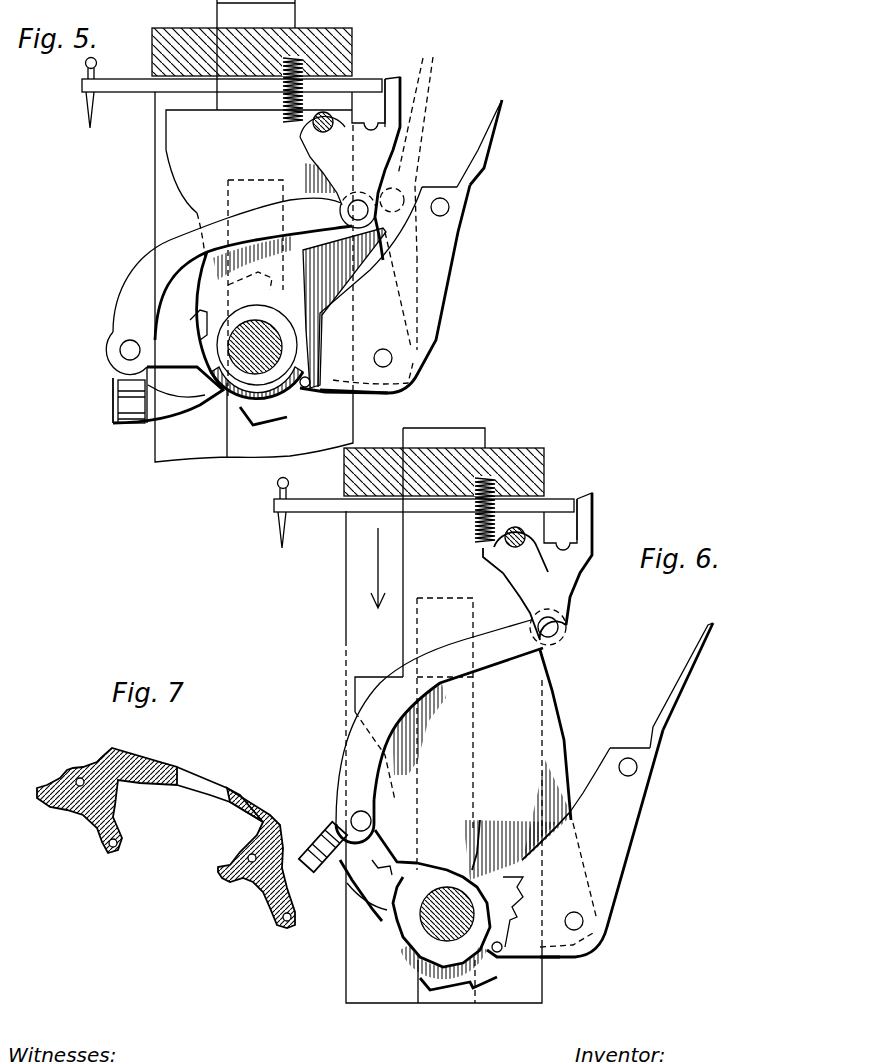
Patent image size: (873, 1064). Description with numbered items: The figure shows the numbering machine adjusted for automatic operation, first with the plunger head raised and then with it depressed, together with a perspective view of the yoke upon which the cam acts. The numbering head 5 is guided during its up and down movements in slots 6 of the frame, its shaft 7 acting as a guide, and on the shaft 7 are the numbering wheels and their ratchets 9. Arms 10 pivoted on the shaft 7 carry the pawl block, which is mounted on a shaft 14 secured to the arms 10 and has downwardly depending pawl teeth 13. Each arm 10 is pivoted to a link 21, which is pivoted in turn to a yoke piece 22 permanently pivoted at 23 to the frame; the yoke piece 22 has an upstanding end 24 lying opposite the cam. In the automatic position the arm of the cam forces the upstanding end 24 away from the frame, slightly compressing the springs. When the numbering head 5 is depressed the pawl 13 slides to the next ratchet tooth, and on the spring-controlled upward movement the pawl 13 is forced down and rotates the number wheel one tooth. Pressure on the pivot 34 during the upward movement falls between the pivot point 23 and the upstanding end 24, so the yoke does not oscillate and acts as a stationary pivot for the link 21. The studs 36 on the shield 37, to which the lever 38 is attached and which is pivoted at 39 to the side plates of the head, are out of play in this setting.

In FIG. 6, the numbering head 5 is at (482, 814).
In FIG. 6, the slots 6 is at (447, 997).
In FIG. 5, the shaft 7 is at (248, 360).
In FIG. 6, the shaft 7 is at (470, 937).
In FIG. 5, the ratchets 9 is at (288, 408).
In FIG. 6, the ratchets 9 is at (373, 918).
In FIG. 5, the arms 10 is at (168, 380).
In FIG. 6, the arms 10 is at (378, 875).
In FIG. 5, the pawl teeth 13 is at (118, 408).
In FIG. 6, the pawl teeth 13 is at (345, 898).
In FIG. 5, the shaft 14 is at (120, 352).
In FIG. 6, the shaft 14 is at (350, 818).
In FIG. 5, the link 21 is at (229, 286).
In FIG. 6, the link 21 is at (439, 731).
In FIG. 5, the yoke piece 22 is at (366, 157).
In FIG. 6, the yoke piece 22 is at (575, 583).
In FIG. 7, the yoke piece 22 is at (262, 810).
In FIG. 5, the pivot 23 is at (318, 130).
In FIG. 6, the pivot 23 is at (520, 547).
In FIG. 5, the upstanding end 24 is at (401, 84).
In FIG. 6, the upstanding end 24 is at (594, 504).
In FIG. 7, the upstanding end 24 is at (200, 768).
In FIG. 6, the pivot 34 is at (559, 628).
In FIG. 5, the studs 36 is at (449, 207).
In FIG. 6, the studs 36 is at (637, 769).
In FIG. 5, the shield 37 is at (422, 262).
In FIG. 6, the shield 37 is at (592, 843).
In FIG. 5, the lever 38 is at (484, 152).
In FIG. 6, the lever 38 is at (683, 686).
In FIG. 5, the pivot 39 is at (392, 358).
In FIG. 6, the pivot 39 is at (583, 921).